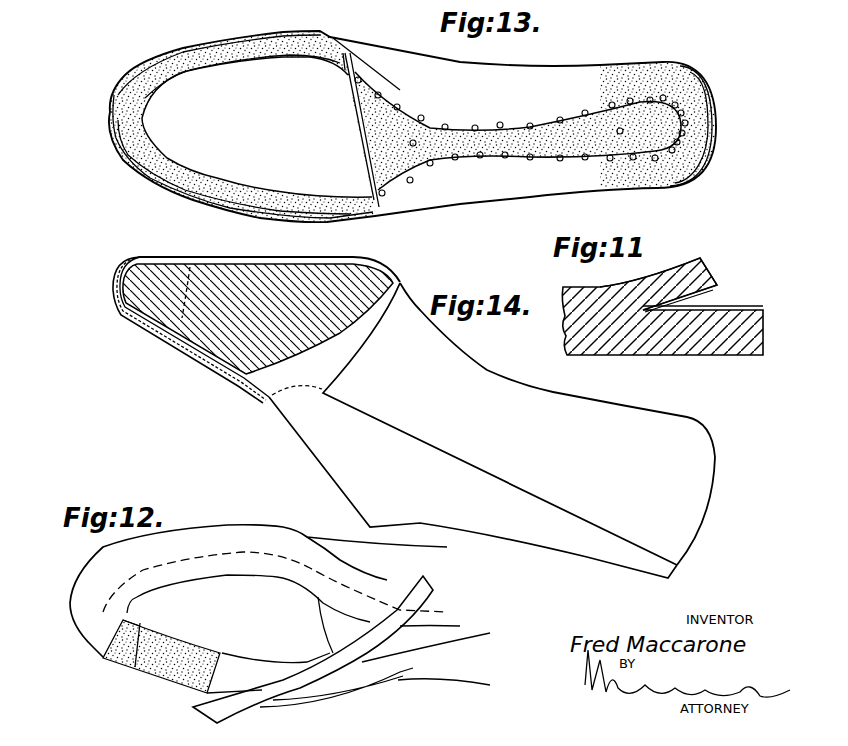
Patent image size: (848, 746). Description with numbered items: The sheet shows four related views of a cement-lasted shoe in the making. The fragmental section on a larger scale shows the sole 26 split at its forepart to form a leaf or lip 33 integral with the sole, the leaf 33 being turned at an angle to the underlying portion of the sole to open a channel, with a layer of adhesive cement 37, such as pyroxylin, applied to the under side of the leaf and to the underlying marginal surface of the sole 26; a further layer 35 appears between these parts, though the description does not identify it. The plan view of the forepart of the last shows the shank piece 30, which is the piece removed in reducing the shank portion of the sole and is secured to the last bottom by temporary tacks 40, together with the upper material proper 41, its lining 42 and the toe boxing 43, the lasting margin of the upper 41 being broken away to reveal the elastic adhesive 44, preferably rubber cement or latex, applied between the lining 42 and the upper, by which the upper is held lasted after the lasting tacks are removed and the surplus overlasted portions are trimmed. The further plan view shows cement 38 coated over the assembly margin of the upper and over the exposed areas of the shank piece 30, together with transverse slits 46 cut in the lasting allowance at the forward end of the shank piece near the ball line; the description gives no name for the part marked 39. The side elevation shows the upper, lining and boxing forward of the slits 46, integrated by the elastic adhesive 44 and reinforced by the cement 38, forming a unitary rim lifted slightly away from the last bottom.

In FIG. 11, the sole 26 is at (690, 348).
In FIG. 13, the shank piece 30 is at (367, 132).
In FIG. 14, the shank piece 30 is at (400, 284).
In FIG. 12, the shank piece 30 is at (321, 617).
In FIG. 11, the leaf or lip 33 is at (702, 265).
In FIG. 11, the adhesive layer 35 is at (693, 303).
In FIG. 11, the adhesive cement 37 is at (717, 287).
In FIG. 13, the cement 38 is at (125, 122).
In FIG. 13, the insole 39 is at (257, 127).
In FIG. 14, the insole 39 is at (235, 347).
In FIG. 12, the insole 39 is at (276, 623).
In FIG. 13, the temporary tacks 40 is at (413, 140).
In FIG. 13, the upper material proper 41 is at (474, 190).
In FIG. 14, the upper material proper 41 is at (122, 317).
In FIG. 12, the upper material proper 41 is at (80, 622).
In FIG. 14, the lining 42 is at (120, 273).
In FIG. 12, the lining 42 is at (181, 643).
In FIG. 14, the toe boxing 43 is at (118, 295).
In FIG. 12, the toe boxing 43 is at (127, 621).
In FIG. 12, the elastic adhesive 44 is at (122, 657).
In FIG. 13, the transverse slits 46 is at (346, 56).
In FIG. 14, the transverse slits 46 is at (356, 258).